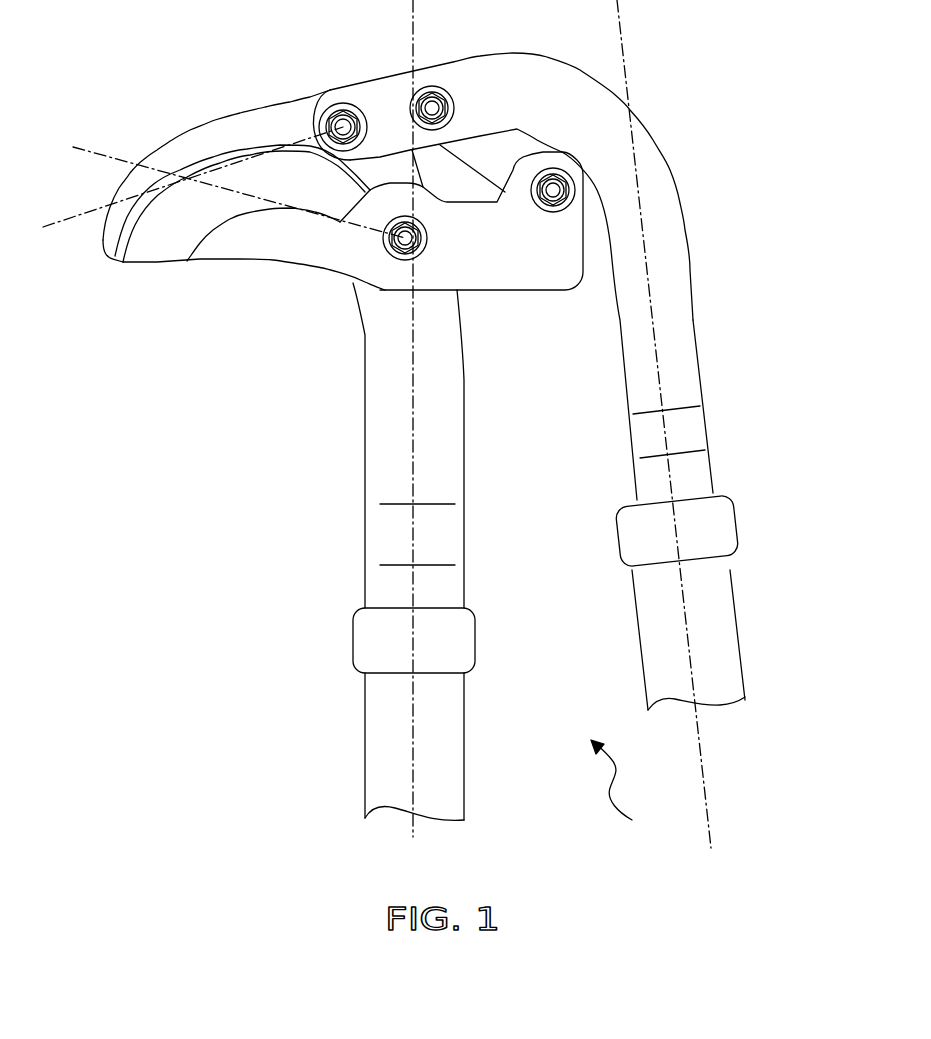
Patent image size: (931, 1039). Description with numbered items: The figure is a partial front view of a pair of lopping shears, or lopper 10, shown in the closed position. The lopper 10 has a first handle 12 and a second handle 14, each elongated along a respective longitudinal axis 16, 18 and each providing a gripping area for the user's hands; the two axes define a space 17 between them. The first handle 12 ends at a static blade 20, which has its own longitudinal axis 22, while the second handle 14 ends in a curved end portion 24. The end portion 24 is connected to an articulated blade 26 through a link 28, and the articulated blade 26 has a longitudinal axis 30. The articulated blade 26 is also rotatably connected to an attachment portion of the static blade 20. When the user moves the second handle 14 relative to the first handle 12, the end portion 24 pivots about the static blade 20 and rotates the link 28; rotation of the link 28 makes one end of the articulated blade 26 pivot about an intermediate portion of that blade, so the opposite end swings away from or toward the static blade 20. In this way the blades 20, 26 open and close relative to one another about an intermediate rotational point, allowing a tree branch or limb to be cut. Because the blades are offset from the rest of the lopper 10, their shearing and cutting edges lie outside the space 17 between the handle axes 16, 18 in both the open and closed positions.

The lopper 10 is at (726, 86).
The first handle 12 is at (392, 738).
The second handle 14 is at (708, 657).
The longitudinal axis 16 is at (413, 823).
The space 17 is at (625, 801).
The longitudinal axis 18 is at (696, 723).
The static blade 20 is at (264, 120).
The longitudinal axis 22 is at (43, 228).
The curved end portion 24 is at (520, 73).
The articulated blade 26 is at (277, 248).
The link 28 is at (500, 145).
The longitudinal axis 30 is at (95, 147).